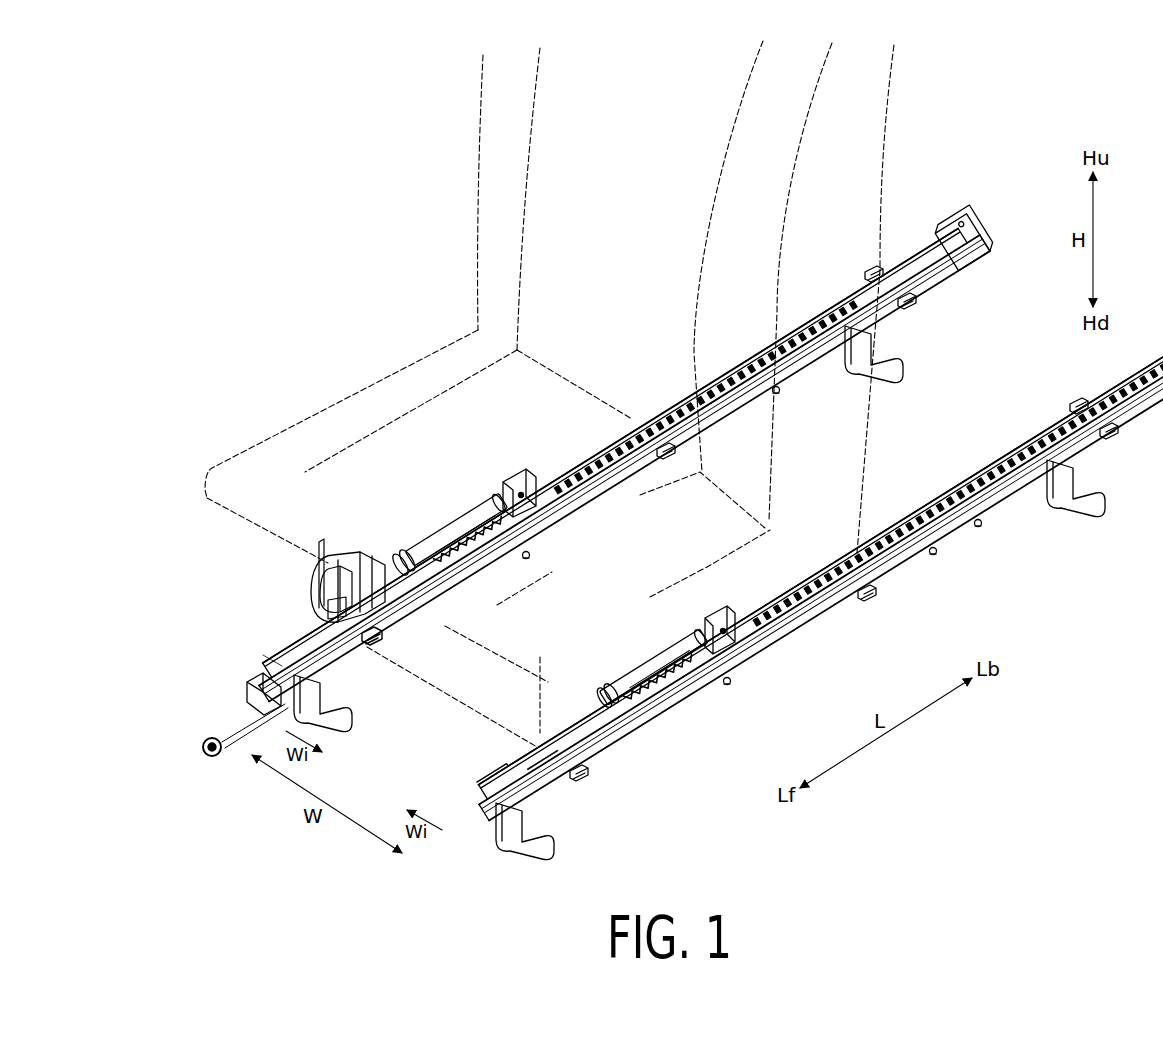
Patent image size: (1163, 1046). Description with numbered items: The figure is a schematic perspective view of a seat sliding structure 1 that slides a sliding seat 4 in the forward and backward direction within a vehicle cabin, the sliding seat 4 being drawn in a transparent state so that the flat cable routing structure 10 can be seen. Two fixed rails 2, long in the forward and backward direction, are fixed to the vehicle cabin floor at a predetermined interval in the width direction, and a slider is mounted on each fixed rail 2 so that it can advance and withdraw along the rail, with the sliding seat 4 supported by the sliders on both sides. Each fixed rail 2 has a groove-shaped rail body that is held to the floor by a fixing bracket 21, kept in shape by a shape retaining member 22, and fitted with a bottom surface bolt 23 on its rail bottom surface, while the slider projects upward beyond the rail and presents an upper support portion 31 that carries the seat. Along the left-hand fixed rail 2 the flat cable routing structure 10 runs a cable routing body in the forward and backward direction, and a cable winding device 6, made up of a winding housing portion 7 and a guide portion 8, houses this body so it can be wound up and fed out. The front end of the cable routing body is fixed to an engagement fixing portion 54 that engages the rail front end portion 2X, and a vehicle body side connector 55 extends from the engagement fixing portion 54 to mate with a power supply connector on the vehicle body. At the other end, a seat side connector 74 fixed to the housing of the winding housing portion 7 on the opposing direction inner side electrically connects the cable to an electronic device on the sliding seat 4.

The seat sliding structure 1 is at (977, 168).
The fixed rail 2 is at (905, 262).
The rail front end portion 2X is at (282, 648).
The sliding seat 4 is at (505, 188).
The cable winding device 6 is at (345, 548).
The winding housing portion 7 is at (325, 610).
The guide portion 8 is at (378, 641).
The flat cable routing structure 10 is at (309, 557).
The fixing bracket 21 is at (882, 356).
The shape retaining member 22 is at (666, 463).
The bottom surface bolt 23 is at (779, 392).
The upper support portion 31 is at (522, 480).
The engagement fixing portion 54 is at (258, 678).
The vehicle body side connector 55 is at (216, 756).
The seat side connector 74 is at (330, 620).